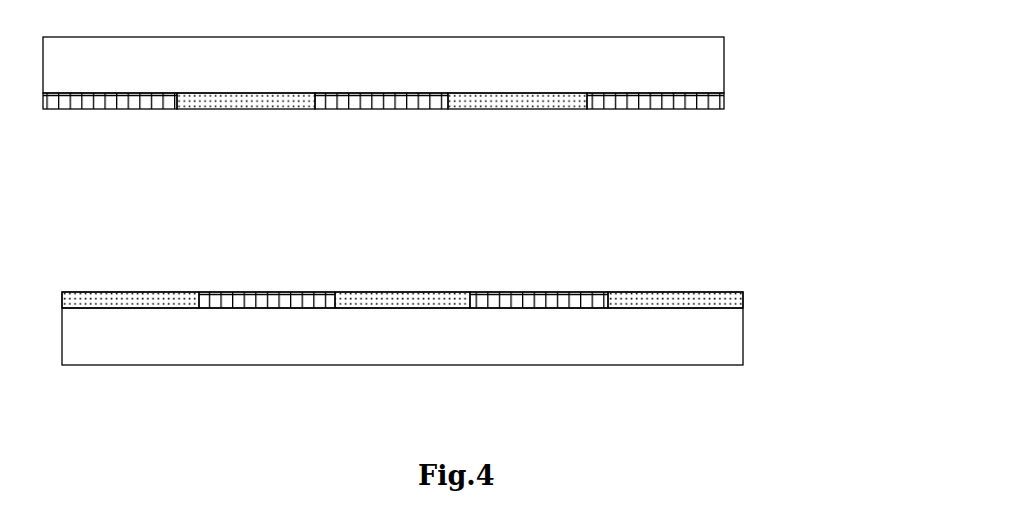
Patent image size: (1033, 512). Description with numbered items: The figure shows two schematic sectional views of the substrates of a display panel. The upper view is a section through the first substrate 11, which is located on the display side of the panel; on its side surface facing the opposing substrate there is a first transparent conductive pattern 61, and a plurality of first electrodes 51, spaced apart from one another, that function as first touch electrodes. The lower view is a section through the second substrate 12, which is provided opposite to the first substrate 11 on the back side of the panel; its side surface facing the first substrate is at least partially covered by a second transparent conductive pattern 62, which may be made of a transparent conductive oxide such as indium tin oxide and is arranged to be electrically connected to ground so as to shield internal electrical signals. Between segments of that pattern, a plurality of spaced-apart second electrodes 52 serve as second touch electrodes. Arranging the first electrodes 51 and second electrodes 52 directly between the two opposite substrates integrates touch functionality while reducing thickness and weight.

The first substrate 11 is at (724, 67).
The second substrate 12 is at (735, 337).
The first electrodes 51 is at (707, 108).
The second electrodes 52 is at (508, 293).
The first transparent conductive pattern 61 is at (490, 110).
The second transparent conductive pattern 62 is at (678, 292).